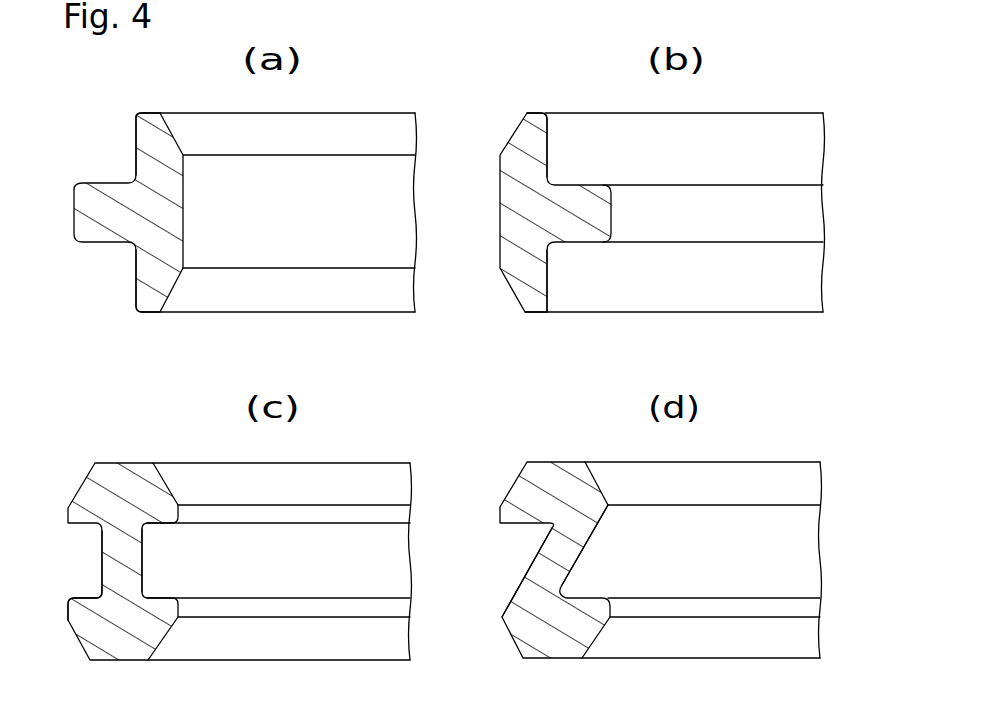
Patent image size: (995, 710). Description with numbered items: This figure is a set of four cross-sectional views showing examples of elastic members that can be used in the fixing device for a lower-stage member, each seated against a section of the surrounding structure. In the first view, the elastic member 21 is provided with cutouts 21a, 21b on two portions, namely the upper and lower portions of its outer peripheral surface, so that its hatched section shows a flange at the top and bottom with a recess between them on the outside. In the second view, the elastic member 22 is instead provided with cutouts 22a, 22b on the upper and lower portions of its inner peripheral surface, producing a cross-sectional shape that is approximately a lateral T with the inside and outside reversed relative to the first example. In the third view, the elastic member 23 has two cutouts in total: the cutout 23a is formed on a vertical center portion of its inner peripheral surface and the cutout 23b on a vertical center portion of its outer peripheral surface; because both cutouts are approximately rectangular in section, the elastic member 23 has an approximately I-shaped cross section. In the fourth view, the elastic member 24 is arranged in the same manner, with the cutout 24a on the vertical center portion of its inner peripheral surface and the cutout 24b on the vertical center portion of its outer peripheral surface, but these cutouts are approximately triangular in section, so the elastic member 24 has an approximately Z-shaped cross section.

The elastic member 21 is at (162, 173).
The cutout 21a is at (135, 162).
The cutout 21b is at (134, 273).
The elastic member 22 is at (528, 195).
The cutout 22a is at (548, 160).
The cutout 22b is at (548, 270).
The elastic member 23 is at (128, 482).
The cutout 23a is at (148, 570).
The cutout 23b is at (95, 580).
The elastic member 24 is at (562, 480).
The cutout 24a is at (573, 562).
The cutout 24b is at (530, 575).